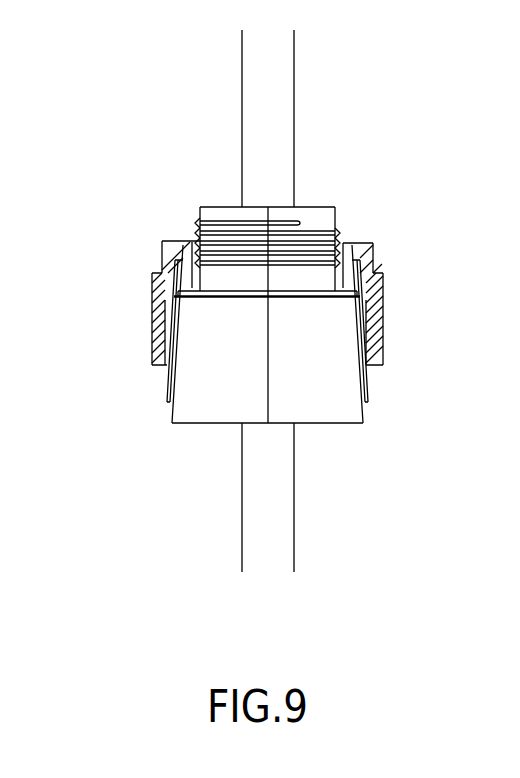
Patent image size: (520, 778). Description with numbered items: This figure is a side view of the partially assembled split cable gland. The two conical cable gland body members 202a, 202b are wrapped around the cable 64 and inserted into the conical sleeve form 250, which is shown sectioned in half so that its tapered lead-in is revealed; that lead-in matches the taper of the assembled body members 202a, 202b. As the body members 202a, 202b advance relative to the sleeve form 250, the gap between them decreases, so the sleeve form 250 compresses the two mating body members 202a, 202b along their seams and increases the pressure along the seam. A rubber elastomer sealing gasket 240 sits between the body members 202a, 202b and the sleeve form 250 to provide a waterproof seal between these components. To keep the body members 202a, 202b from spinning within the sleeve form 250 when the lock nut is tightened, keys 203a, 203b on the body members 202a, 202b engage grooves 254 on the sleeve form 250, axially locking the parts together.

The cable 64 is at (273, 510).
The sleeve form 250 is at (162, 242).
The grooves 254 is at (160, 270).
The sealing gasket 240 is at (192, 290).
The cable gland body member 202a is at (170, 412).
The cable gland body member 202b is at (365, 412).
The key 203a is at (170, 383).
The key 203b is at (365, 392).